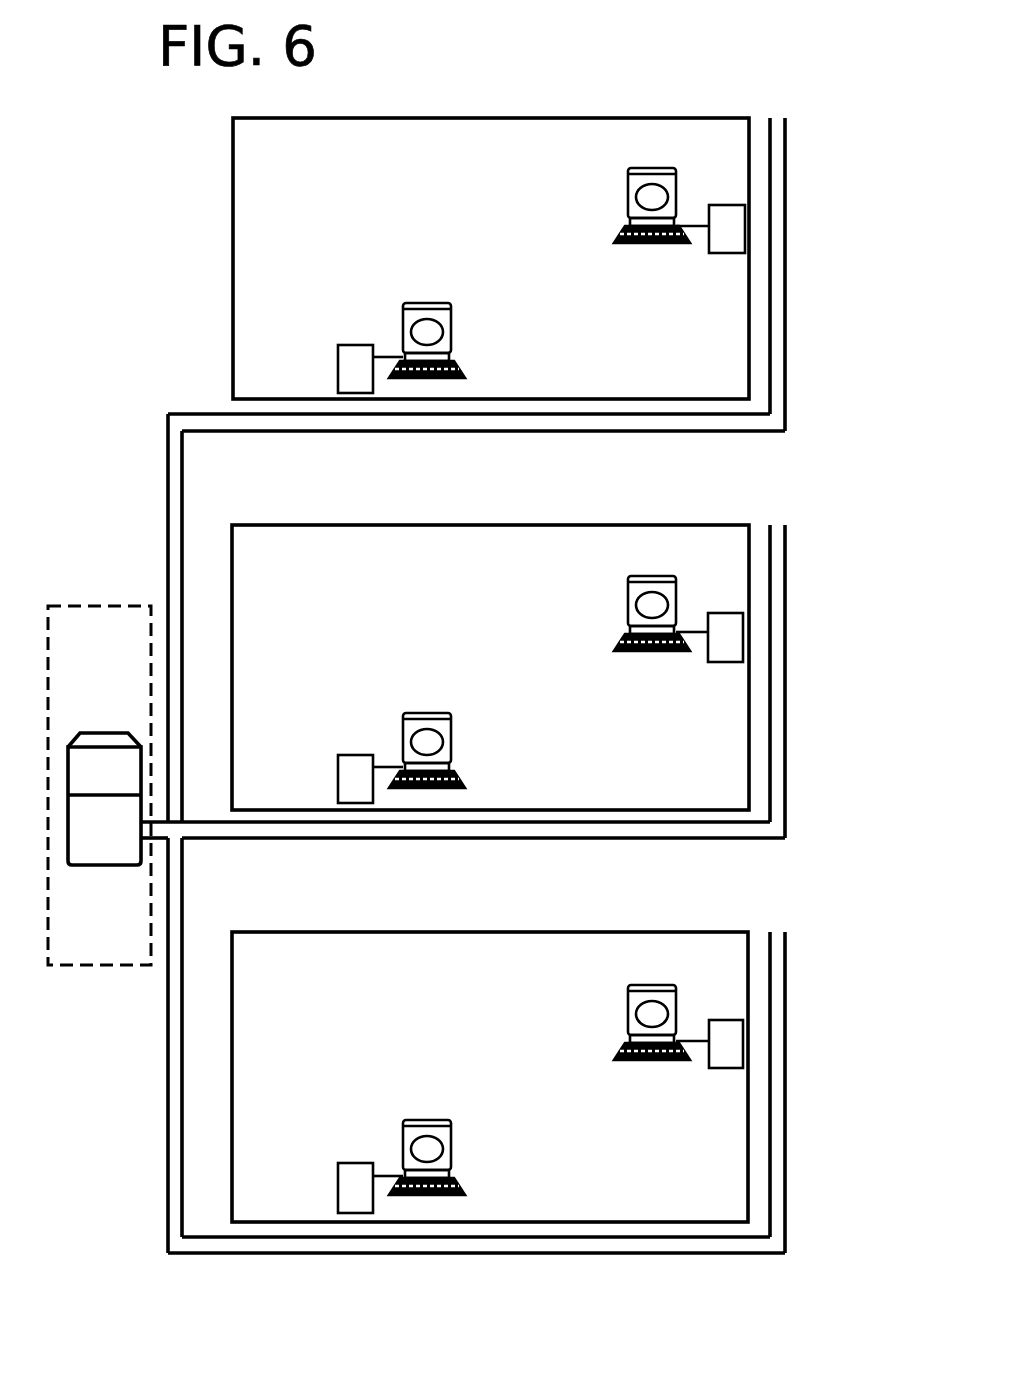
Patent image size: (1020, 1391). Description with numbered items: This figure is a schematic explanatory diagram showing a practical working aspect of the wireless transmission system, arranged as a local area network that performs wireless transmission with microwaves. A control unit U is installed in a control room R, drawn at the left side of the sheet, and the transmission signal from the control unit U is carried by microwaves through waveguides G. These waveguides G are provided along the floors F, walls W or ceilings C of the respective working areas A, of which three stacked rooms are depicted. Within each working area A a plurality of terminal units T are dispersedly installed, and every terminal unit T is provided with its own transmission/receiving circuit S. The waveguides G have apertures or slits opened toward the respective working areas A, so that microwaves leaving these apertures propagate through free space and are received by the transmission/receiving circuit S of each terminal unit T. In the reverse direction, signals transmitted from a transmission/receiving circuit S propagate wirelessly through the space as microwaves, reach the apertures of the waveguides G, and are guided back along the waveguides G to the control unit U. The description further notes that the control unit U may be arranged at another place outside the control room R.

The terminal unit T is at (628, 188).
The transmission/receiving circuit S is at (338, 362).
The waveguide G is at (346, 433).
The control room R is at (78, 604).
The control unit U is at (125, 856).
The working area A is at (490, 670).
The ceiling C is at (510, 508).
The wall W is at (846, 664).
The floor F is at (590, 866).